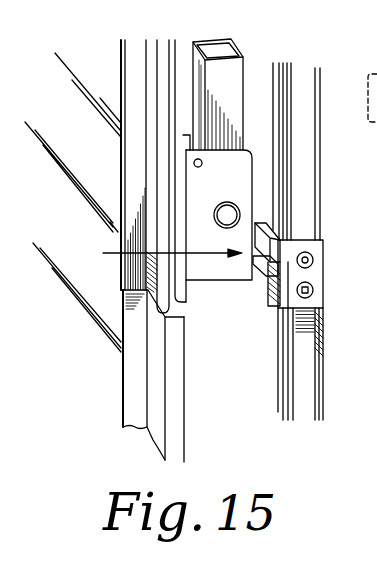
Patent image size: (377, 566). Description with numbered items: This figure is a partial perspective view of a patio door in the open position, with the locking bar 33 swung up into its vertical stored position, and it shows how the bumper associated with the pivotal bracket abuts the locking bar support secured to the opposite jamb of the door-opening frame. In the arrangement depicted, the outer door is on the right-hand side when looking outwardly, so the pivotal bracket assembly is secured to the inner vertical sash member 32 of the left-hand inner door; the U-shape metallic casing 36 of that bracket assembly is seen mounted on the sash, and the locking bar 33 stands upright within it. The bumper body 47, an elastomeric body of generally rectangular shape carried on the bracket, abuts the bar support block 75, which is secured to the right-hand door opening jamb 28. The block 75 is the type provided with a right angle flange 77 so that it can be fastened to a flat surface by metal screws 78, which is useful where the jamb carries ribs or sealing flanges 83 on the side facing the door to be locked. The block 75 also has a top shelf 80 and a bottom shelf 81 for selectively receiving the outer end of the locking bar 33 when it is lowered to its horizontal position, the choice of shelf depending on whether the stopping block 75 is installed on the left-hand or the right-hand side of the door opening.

The jamb 28 is at (305, 100).
The inner vertical sash member 32 is at (167, 72).
The locking bar 33 is at (230, 85).
The U-shape metallic casing 36 is at (219, 286).
The bumper body 47 is at (258, 286).
The bar support block 75 is at (325, 276).
The right angle flange 77 is at (316, 304).
The metal screws 78 is at (314, 295).
The top shelf 80 is at (270, 231).
The bottom shelf 81 is at (270, 292).
The sealing flanges 83 is at (293, 355).